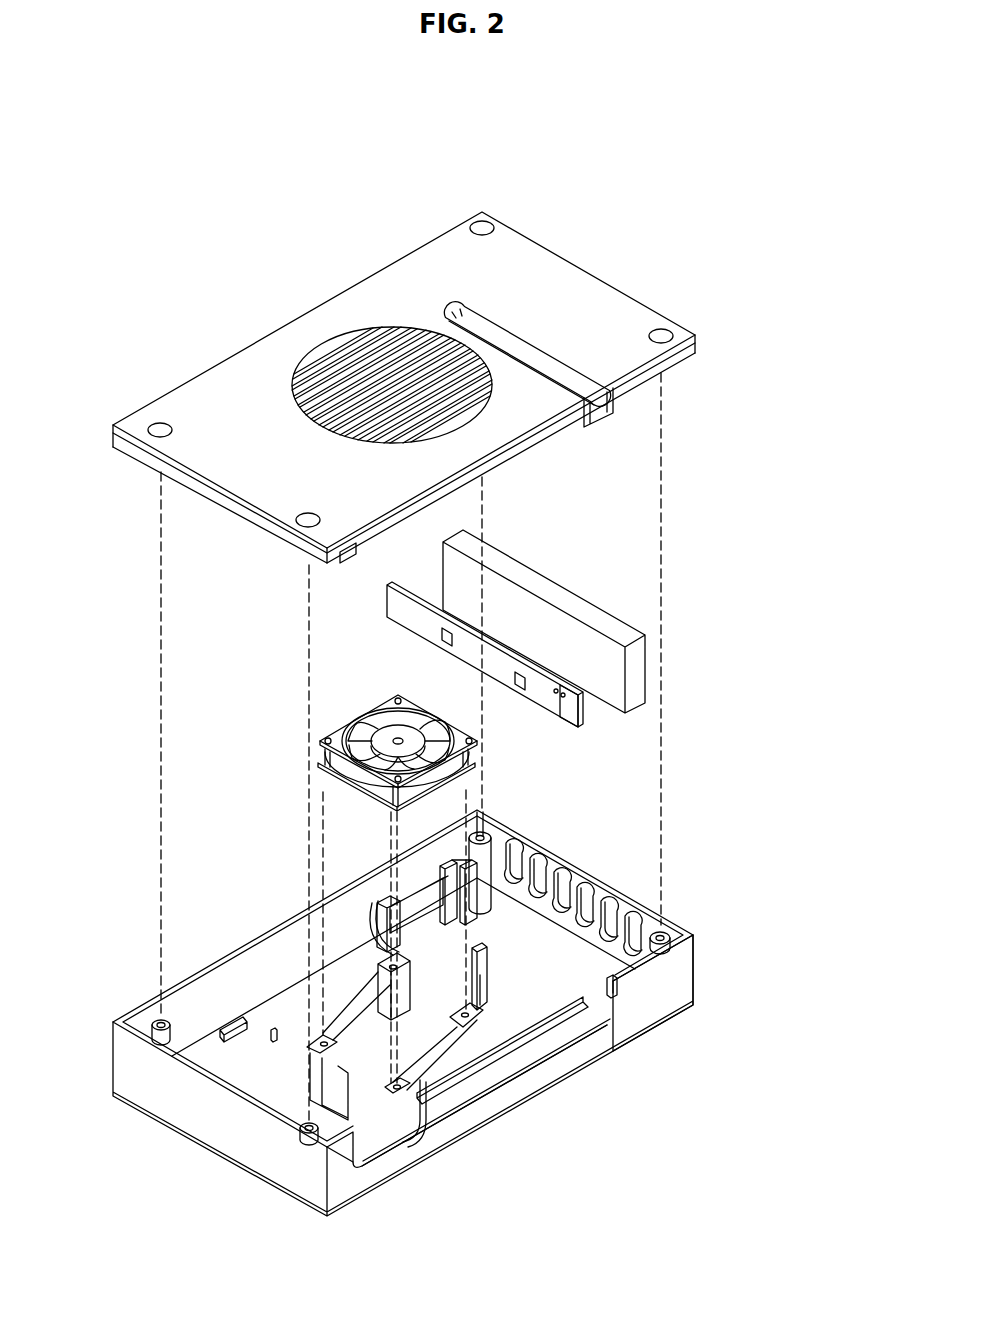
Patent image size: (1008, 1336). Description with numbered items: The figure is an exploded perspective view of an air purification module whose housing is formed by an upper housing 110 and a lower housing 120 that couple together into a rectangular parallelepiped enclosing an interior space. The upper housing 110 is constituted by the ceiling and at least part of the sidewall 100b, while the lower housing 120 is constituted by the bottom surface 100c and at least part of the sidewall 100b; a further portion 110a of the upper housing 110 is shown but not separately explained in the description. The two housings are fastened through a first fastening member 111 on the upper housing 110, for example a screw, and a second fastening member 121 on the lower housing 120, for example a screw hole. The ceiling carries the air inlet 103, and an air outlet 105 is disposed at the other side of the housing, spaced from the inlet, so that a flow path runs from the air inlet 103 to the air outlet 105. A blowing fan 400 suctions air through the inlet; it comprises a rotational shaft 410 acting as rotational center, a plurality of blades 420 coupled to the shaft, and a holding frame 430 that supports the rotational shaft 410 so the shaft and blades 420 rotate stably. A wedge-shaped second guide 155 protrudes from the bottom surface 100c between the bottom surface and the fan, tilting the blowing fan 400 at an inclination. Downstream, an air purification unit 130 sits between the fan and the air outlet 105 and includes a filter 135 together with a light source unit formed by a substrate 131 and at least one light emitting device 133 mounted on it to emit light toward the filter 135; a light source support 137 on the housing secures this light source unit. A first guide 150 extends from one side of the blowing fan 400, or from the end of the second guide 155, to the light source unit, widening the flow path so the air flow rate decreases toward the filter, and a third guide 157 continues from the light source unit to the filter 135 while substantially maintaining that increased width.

The air inlet 103 is at (330, 363).
The air outlet 105 is at (577, 893).
The upper housing 110 is at (253, 363).
The slot of top cover 110a is at (585, 292).
The first fastening member 111 is at (160, 430).
The lower housing 120 is at (227, 1128).
The second fastening member 121 is at (161, 1025).
The air purification unit 130 is at (621, 646).
The substrate 131 is at (571, 708).
The light emitting device 133 is at (527, 668).
The filter 135 is at (637, 668).
The light source support 137 is at (385, 915).
The first guide 150 is at (507, 1022).
The second guide 155 is at (470, 1040).
The third guide 157 is at (416, 912).
The blowing fan 400 is at (315, 755).
The rotational shaft 410 is at (380, 733).
The blades 420 is at (360, 750).
The holding frame 430 is at (357, 780).
The sidewall 100b is at (680, 985).
The bottom surface 100c is at (442, 1150).